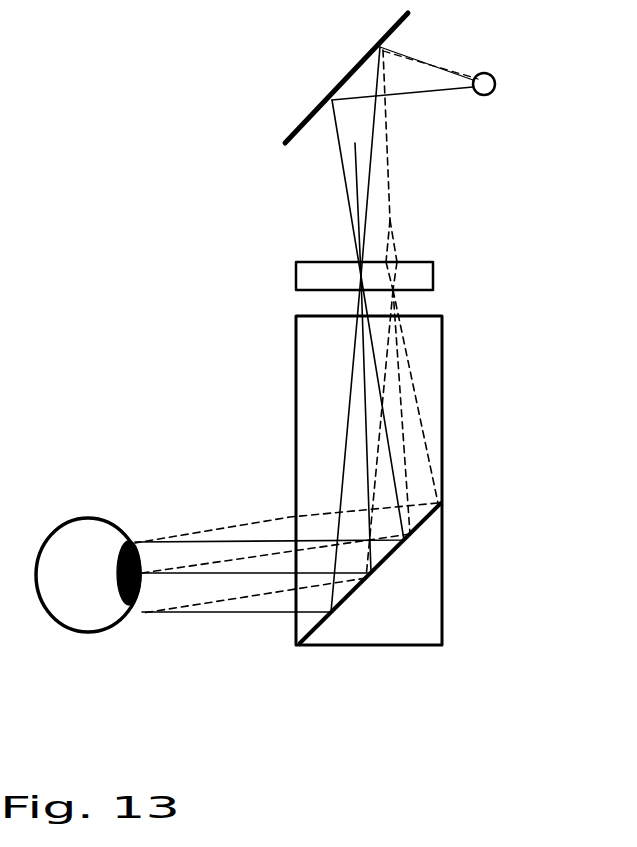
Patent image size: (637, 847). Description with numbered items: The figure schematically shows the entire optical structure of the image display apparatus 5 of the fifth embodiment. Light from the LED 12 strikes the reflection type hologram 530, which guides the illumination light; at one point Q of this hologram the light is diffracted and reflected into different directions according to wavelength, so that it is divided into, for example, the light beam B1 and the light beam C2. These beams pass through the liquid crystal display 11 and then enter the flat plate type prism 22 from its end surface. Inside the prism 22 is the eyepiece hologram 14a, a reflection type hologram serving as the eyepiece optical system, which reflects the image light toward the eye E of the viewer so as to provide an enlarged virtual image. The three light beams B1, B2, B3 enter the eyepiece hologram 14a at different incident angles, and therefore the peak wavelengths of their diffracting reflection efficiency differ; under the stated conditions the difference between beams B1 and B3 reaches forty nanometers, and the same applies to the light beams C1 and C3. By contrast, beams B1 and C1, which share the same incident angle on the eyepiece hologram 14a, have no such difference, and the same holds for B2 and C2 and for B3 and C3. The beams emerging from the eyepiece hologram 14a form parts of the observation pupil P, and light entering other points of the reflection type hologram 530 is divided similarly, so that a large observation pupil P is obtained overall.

The reflection type hologram 530 is at (345, 78).
The point of the reflection type hologram Q is at (367, 27).
The LED 12 is at (495, 83).
The light beam B1 is at (375, 125).
The light beam B2 is at (230, 573).
The light beam B3 is at (342, 168).
The light beam C1 is at (193, 602).
The light beam C2 is at (388, 190).
The light beam C3 is at (273, 517).
The liquid crystal display 11 is at (423, 275).
The flat plate type prism 22 is at (428, 380).
The eyepiece hologram 14a is at (390, 558).
The image display apparatus 5 is at (470, 638).
The eye E is at (78, 620).
The observation pupil P is at (152, 592).